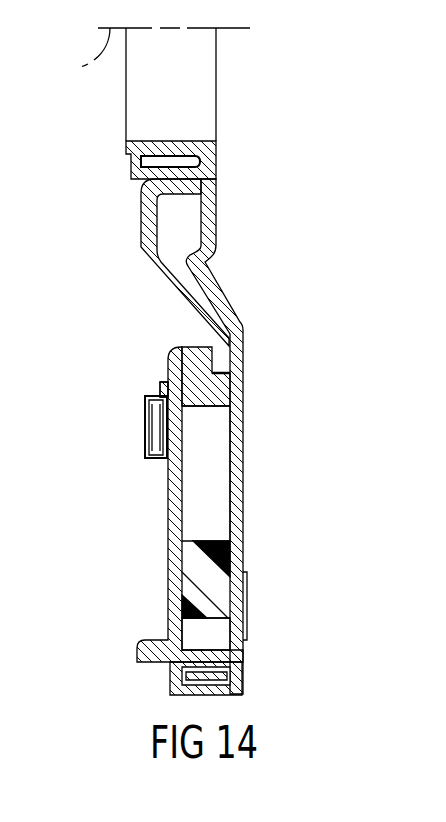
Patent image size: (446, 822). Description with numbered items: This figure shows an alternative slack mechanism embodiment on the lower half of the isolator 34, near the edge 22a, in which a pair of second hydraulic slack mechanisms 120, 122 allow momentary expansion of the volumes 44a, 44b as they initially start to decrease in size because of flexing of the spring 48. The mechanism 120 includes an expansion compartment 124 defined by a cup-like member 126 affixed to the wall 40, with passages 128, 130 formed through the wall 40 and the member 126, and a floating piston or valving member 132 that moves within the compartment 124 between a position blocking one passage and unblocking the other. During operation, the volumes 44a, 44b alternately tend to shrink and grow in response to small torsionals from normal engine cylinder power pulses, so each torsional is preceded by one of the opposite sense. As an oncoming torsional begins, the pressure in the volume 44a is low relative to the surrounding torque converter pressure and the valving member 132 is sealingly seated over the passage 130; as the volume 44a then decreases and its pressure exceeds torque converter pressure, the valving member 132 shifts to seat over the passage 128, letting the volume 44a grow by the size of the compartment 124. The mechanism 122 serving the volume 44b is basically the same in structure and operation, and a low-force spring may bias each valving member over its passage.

The cover edge 22a is at (78, 68).
The isolator 34 is at (283, 338).
The wall 40 is at (162, 568).
The volume 44a is at (217, 448).
The volume 44b is at (212, 633).
The spring 48 is at (226, 536).
The second hydraulic slack mechanism 120 is at (120, 465).
The second hydraulic slack mechanism 122 is at (252, 674).
The expansion compartment 124 is at (155, 400).
The cup-like member 126 is at (143, 408).
The passage 128 is at (145, 427).
The passage 130 is at (205, 428).
The floating piston or valving member 132 is at (205, 458).